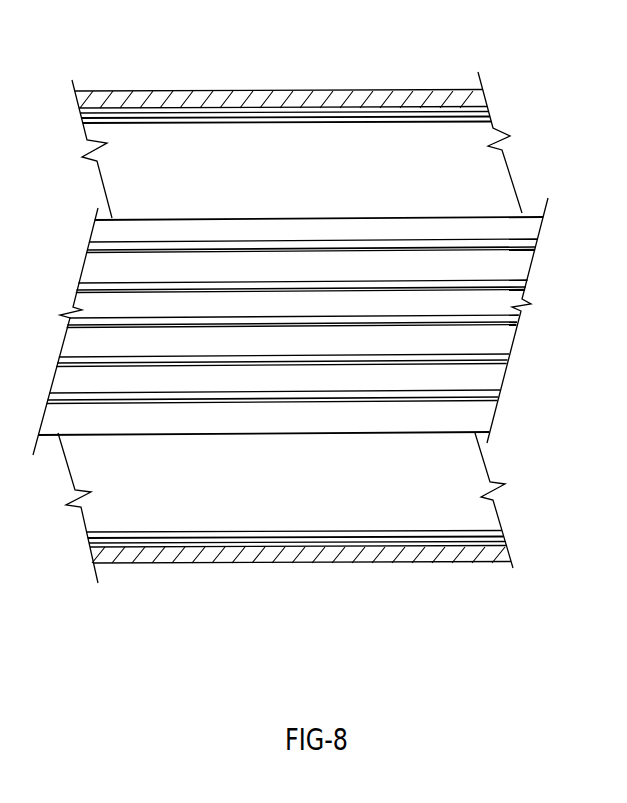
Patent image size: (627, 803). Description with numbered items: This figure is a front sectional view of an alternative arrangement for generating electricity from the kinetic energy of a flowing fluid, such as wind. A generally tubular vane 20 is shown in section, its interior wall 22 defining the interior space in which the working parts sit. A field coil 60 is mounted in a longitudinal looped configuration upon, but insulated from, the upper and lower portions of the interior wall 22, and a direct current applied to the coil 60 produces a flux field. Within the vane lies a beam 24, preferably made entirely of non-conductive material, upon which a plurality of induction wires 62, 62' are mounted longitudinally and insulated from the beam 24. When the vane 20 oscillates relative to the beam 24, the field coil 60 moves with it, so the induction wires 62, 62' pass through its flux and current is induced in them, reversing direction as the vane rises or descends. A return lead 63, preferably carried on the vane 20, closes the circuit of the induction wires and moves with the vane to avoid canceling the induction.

The vane 20 is at (262, 92).
The interior wall 22 is at (460, 148).
The beam 24 is at (102, 232).
The field coil 60 is at (212, 117).
The induction wire 62 is at (347, 200).
The induction wire 62' is at (263, 310).
The return lead 63 is at (269, 326).